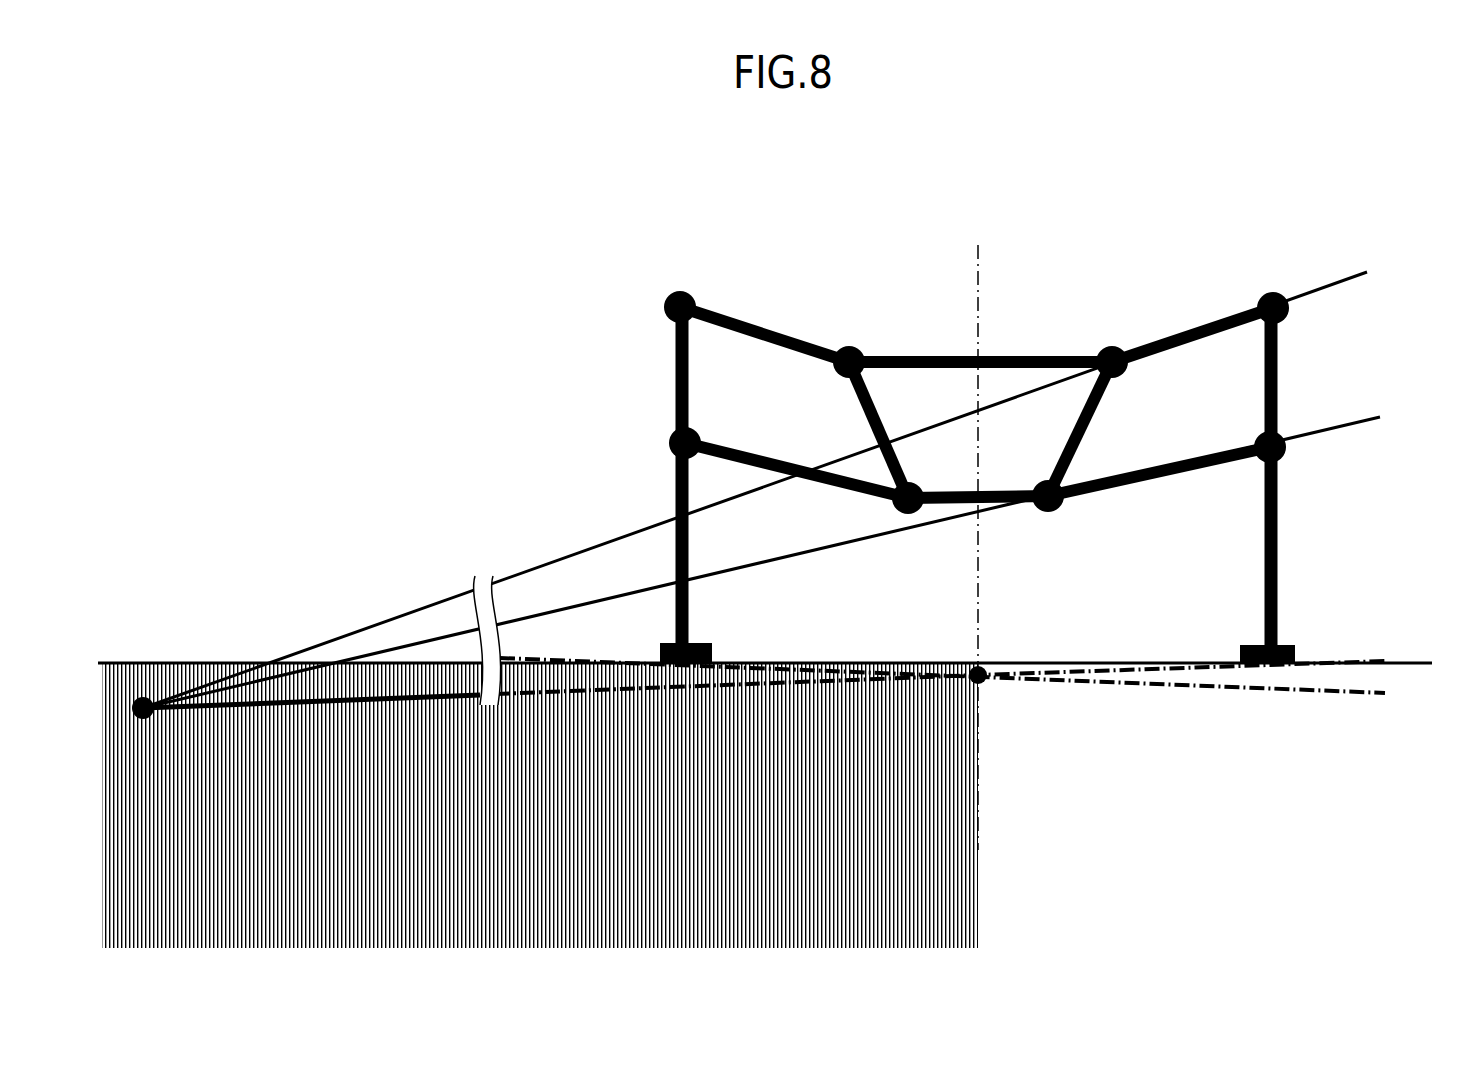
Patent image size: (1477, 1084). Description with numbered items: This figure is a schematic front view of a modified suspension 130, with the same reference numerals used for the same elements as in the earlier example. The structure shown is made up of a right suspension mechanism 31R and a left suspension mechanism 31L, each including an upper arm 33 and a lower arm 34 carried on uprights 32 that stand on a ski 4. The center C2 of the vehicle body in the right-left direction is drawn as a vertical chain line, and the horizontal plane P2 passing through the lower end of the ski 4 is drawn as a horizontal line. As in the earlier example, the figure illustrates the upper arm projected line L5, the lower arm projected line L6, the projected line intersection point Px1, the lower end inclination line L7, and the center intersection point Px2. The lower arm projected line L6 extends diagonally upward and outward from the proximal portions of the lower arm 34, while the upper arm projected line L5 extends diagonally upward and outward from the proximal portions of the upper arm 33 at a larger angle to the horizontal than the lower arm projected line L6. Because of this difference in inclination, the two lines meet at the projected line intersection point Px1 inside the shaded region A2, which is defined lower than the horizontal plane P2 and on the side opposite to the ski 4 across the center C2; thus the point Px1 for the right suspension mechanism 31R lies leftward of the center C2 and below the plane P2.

The suspension 130 is at (980, 321).
The right suspension mechanism 31R is at (755, 315).
The left suspension mechanism 31L is at (1120, 350).
The support post 32 is at (676, 393).
The upper arm 33 is at (771, 342).
The lower arm 34 is at (818, 473).
The ski 4 is at (697, 642).
The center C2 is at (980, 529).
The upper arm projected line L5 is at (1338, 282).
The lower arm projected line L6 is at (1343, 428).
The lower end inclination line L7 is at (583, 691).
The horizontal plane P2 is at (785, 662).
The projected line intersection point Px1 is at (143, 720).
The center intersection point Px2 is at (975, 687).
The region A2 is at (427, 793).